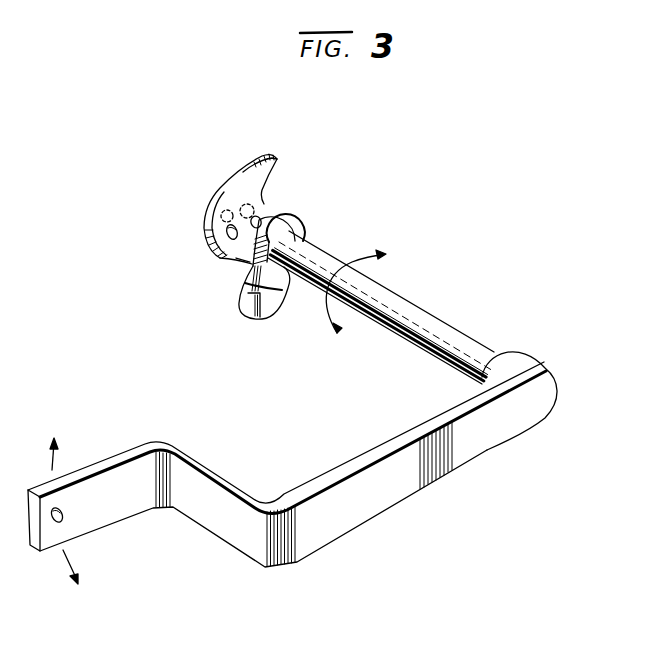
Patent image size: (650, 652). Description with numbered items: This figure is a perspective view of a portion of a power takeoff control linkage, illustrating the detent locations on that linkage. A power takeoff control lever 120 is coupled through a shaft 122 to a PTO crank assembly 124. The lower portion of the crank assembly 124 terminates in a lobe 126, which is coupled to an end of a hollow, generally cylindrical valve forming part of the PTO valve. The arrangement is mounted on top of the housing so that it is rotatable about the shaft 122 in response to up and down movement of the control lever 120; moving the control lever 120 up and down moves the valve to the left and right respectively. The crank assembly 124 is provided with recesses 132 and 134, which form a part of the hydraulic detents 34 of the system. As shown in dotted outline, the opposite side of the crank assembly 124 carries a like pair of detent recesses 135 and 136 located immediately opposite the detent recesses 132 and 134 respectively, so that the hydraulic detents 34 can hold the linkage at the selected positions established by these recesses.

The hydraulic detents 34 is at (238, 251).
The power takeoff control lever 120 is at (428, 476).
The shaft 122 is at (396, 335).
The PTO crank assembly 124 is at (209, 220).
The lobe 126 is at (268, 322).
The recess 132 is at (233, 242).
The recess 134 is at (285, 199).
The detent recess 135 is at (222, 211).
The detent recess 136 is at (241, 205).